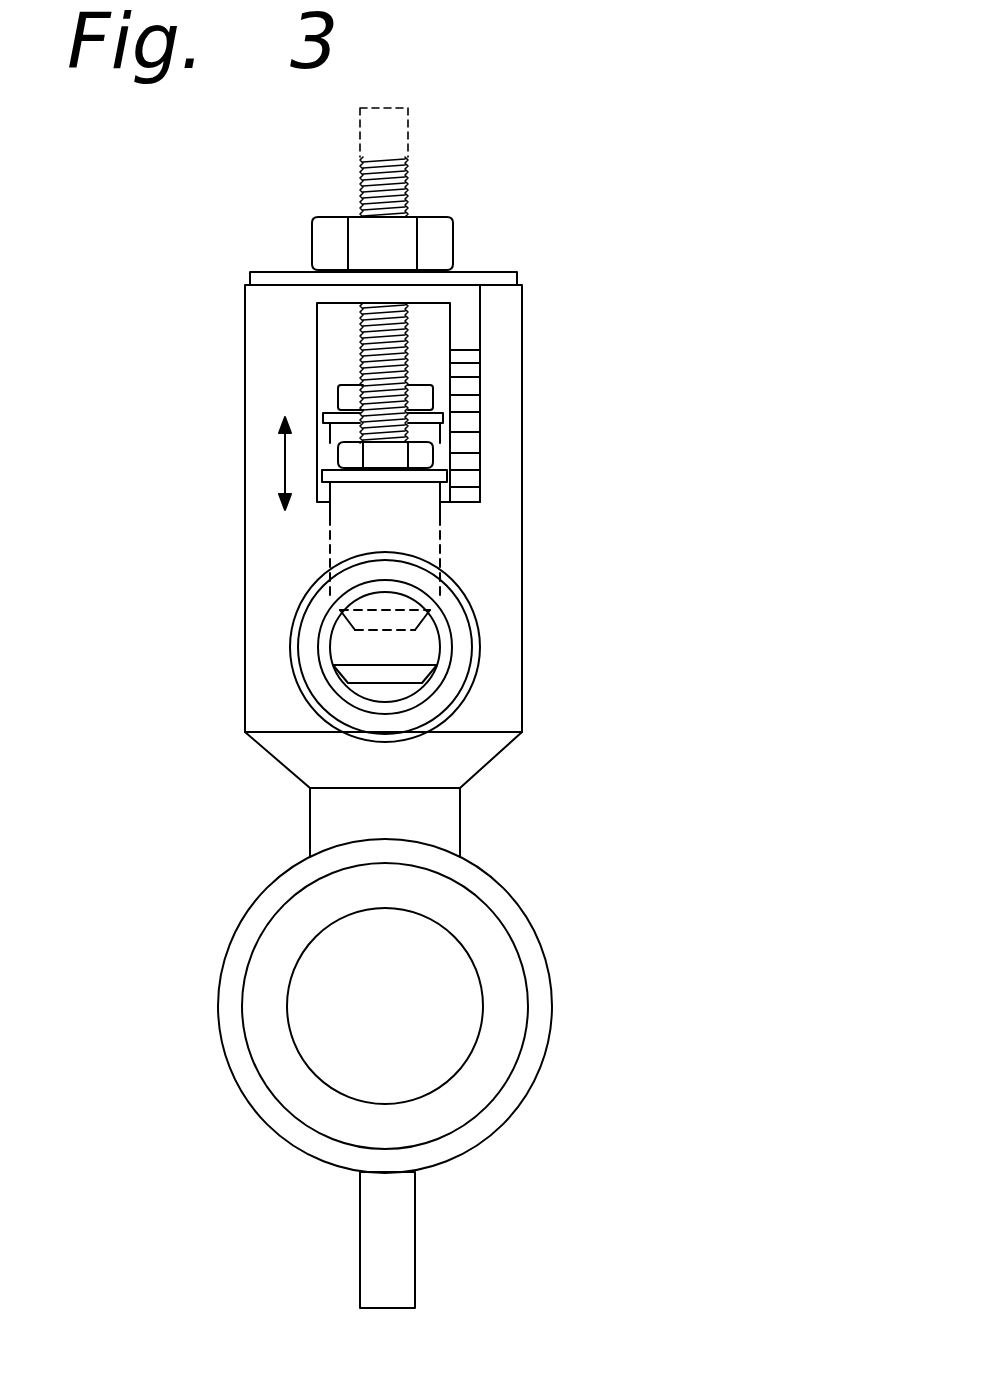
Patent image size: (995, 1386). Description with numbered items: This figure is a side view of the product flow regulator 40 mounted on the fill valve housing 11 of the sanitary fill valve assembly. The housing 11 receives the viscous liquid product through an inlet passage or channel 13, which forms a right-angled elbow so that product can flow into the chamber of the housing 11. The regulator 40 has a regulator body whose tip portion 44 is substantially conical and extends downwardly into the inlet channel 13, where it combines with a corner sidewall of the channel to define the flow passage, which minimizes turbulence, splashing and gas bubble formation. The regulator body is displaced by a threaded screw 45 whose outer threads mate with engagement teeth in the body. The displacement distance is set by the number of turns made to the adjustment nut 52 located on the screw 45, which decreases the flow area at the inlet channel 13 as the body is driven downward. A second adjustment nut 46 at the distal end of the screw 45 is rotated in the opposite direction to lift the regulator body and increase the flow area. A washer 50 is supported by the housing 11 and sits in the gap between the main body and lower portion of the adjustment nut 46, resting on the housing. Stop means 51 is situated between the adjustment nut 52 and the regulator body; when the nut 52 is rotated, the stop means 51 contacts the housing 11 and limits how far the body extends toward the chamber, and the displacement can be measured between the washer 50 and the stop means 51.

The fill valve housing 11 is at (550, 1062).
The inlet passage or channel 13 is at (463, 597).
The product flow regulator 40 is at (583, 279).
The tip portion 44 is at (418, 676).
The screw 45 is at (358, 366).
The adjustment nut 46 is at (457, 233).
The washer 50 is at (487, 272).
The stop means 51 is at (447, 474).
The adjustment nut 52 is at (420, 437).